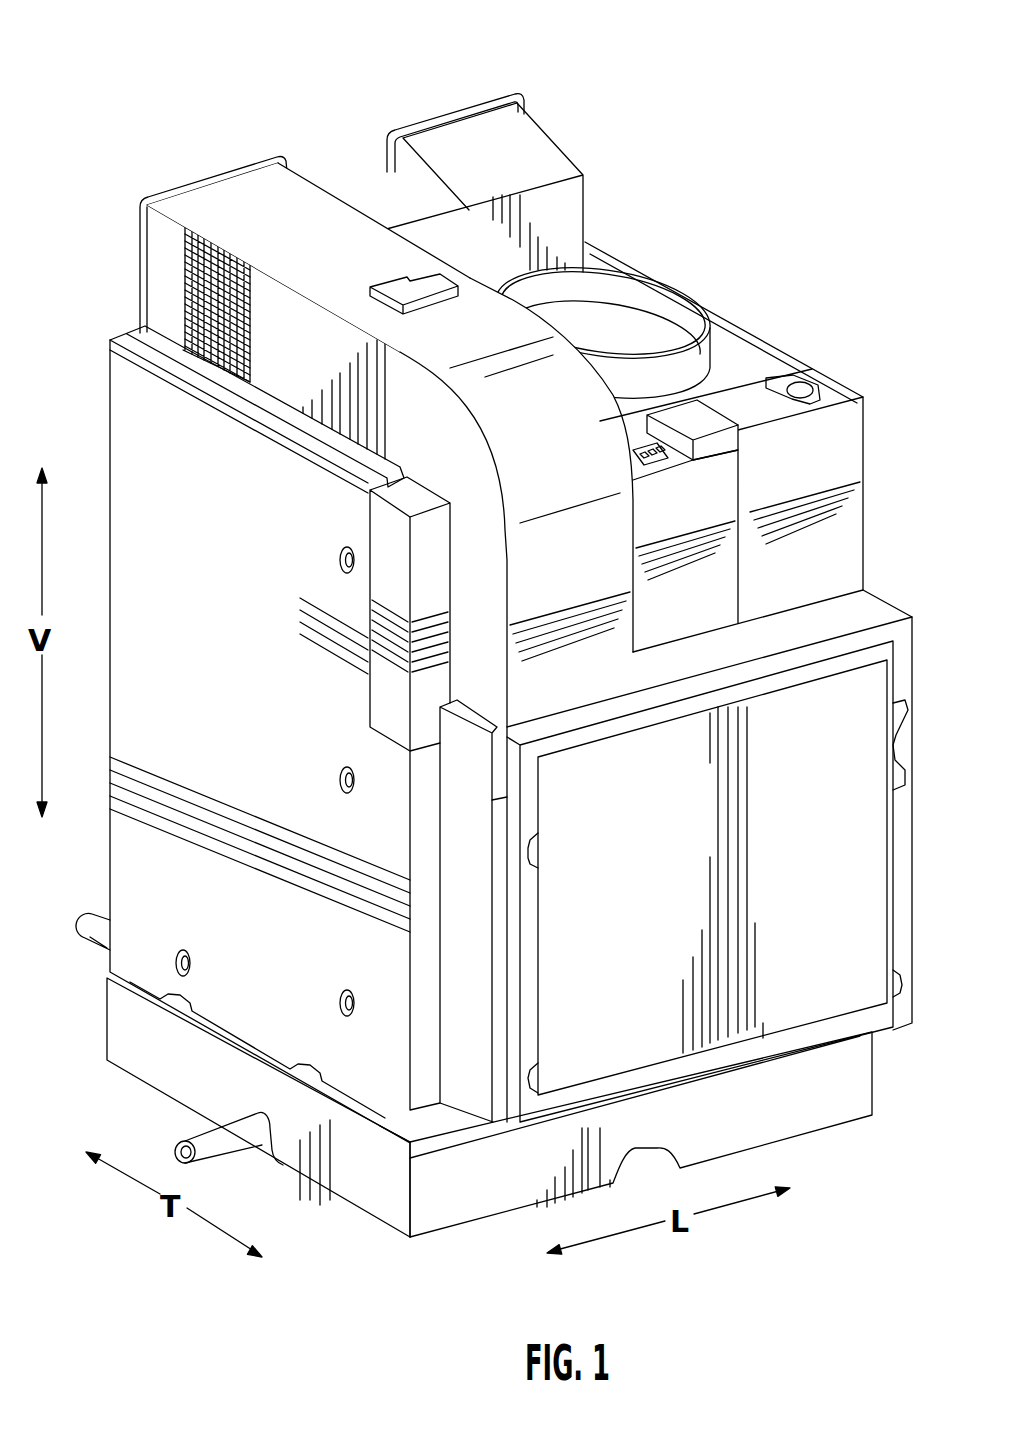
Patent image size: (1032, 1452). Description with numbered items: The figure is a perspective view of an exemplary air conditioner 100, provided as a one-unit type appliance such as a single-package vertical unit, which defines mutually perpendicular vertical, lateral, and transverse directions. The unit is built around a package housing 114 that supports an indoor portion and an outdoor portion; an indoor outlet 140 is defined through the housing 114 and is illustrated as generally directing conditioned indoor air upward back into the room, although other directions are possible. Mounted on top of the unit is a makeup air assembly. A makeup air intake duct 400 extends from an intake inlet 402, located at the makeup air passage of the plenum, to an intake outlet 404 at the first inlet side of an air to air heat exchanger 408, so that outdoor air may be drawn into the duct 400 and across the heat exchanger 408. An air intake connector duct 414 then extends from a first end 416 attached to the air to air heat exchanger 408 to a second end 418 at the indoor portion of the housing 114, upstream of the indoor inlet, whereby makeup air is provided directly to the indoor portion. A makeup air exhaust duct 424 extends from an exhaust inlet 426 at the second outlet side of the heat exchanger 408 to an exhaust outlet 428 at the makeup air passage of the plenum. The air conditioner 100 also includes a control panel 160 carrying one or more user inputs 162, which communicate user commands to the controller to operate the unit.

The air conditioner 100 is at (224, 76).
The package housing 114 is at (152, 730).
The indoor outlet 140 is at (673, 287).
The control panel 160 is at (686, 473).
The user inputs 162 is at (742, 424).
The makeup air intake duct 400 is at (160, 268).
The intake inlet 402 is at (213, 178).
The intake outlet 404 is at (282, 197).
The air to air heat exchanger 408 is at (213, 325).
The air intake connector duct 414 is at (600, 420).
The first end 416 is at (233, 339).
The second end 418 is at (455, 720).
The makeup air exhaust duct 424 is at (545, 153).
The exhaust inlet 426 is at (332, 200).
The exhaust outlet 428 is at (463, 113).